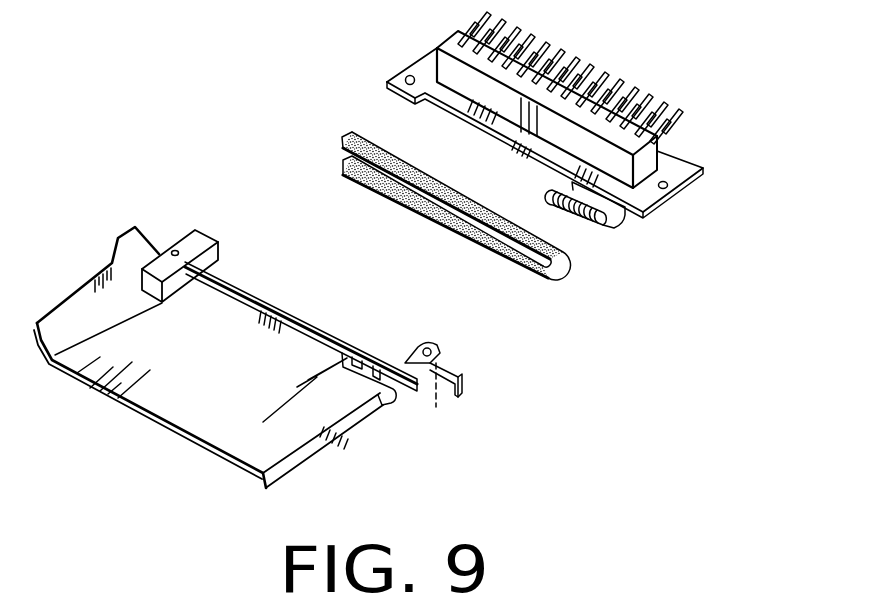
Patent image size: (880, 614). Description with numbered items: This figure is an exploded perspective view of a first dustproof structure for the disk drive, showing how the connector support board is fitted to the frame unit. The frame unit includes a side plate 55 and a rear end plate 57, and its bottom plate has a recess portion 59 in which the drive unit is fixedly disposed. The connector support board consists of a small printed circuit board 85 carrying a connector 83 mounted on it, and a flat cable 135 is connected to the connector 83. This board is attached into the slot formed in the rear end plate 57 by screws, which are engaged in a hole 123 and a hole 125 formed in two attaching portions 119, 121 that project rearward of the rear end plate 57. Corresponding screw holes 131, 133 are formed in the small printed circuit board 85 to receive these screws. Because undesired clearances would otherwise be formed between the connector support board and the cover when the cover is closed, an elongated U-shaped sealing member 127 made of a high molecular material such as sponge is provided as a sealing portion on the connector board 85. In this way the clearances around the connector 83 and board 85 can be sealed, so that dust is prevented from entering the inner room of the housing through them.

The side plate 55 is at (197, 357).
The rear end plate 57 is at (312, 323).
The recess portion 59 is at (248, 393).
The connector 83 is at (663, 138).
The small printed circuit board 85 is at (697, 160).
The attaching portion 119 is at (189, 235).
The attaching portion 121 is at (441, 352).
The hole 123 is at (173, 250).
The hole 125 is at (427, 345).
The U-shaped sealing member 127 is at (570, 267).
The screw hole 131 is at (408, 76).
The screw hole 133 is at (670, 188).
The flat cable 135 is at (616, 228).